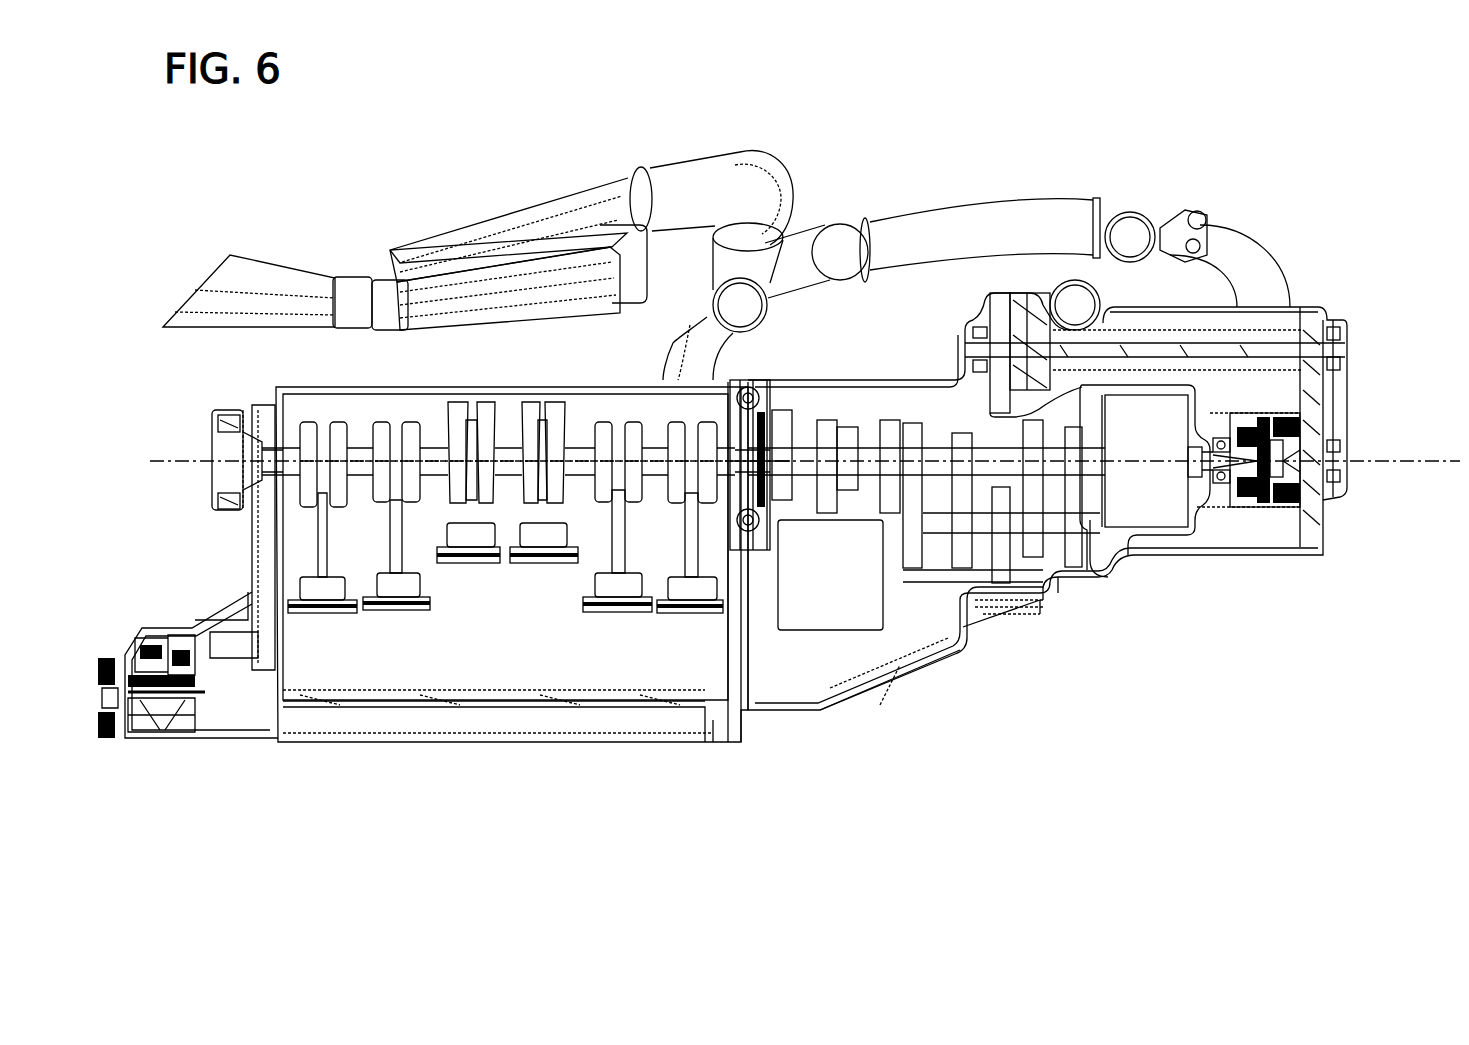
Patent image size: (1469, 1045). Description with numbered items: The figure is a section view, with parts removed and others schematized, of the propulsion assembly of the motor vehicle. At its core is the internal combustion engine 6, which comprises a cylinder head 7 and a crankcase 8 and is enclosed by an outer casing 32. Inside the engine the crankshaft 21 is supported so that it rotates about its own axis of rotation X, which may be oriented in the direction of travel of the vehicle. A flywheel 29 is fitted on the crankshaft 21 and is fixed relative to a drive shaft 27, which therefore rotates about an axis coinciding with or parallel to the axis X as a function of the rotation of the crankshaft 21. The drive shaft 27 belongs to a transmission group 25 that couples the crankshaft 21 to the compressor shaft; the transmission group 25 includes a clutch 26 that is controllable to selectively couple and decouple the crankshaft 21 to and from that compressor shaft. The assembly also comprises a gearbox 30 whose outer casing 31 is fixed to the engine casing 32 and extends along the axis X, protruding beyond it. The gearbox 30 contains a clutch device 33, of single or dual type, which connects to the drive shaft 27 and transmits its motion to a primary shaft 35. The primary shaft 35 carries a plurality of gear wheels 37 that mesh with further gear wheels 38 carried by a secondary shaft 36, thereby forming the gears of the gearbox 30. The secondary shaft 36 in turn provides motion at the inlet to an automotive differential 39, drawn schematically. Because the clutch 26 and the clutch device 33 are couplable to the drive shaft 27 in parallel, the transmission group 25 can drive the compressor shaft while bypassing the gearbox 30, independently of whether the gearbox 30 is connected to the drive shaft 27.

The internal combustion engine 6 is at (212, 594).
The cylinder head 7 is at (450, 695).
The crankcase 8 is at (255, 410).
The crankshaft 21 is at (505, 440).
The transmission group 25 is at (1217, 405).
The clutch 26 is at (1270, 430).
The drive shaft 27 is at (1080, 565).
The flywheel 29 is at (750, 385).
The gearbox 30 is at (912, 615).
The outer casing 31 is at (905, 385).
The outer casing 32 is at (742, 735).
The clutch device 33 is at (1173, 510).
The primary shaft 35 is at (945, 540).
The secondary shaft 36 is at (935, 560).
The gear wheels 37 is at (1030, 385).
The gear wheels 38 is at (1003, 540).
The automotive differential 39 is at (848, 625).
The axis of rotation X is at (1388, 461).